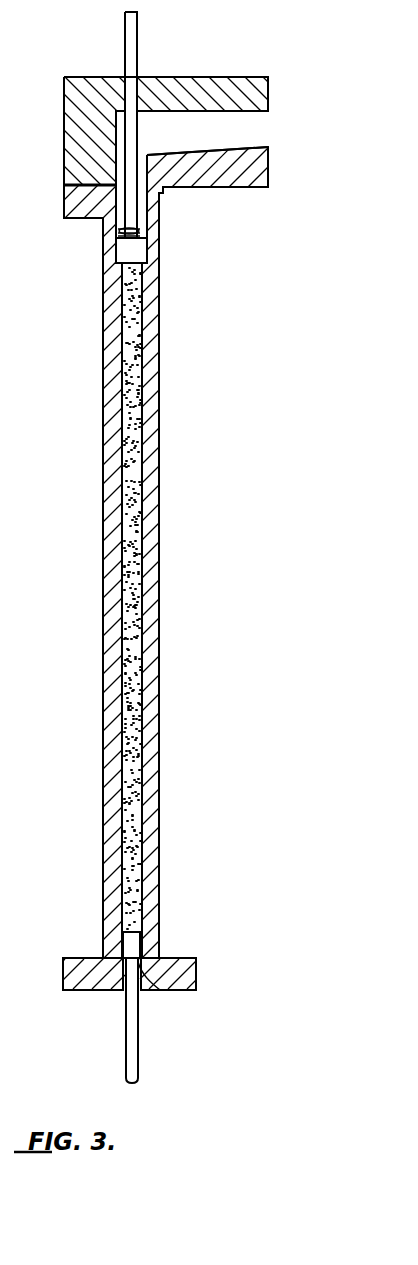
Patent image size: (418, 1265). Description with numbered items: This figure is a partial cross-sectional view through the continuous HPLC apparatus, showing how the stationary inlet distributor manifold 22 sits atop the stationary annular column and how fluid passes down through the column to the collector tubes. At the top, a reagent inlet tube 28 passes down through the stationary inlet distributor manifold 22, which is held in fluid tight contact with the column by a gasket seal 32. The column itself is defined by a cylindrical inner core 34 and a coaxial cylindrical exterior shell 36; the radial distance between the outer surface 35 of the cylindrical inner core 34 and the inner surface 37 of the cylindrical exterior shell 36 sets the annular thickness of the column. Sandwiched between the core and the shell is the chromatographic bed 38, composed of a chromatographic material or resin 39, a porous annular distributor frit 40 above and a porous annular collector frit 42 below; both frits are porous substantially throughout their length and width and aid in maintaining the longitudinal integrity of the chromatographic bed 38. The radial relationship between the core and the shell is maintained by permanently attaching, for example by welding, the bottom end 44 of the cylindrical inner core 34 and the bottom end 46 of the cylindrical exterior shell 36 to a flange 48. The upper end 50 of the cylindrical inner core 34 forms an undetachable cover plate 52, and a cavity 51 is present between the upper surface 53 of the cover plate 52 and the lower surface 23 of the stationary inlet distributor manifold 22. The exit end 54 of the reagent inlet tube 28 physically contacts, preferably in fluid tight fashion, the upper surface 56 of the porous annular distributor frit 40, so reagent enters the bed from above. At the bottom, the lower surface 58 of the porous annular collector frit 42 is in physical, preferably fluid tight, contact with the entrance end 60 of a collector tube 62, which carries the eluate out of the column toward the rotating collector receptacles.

The stationary inlet distributor manifold 22 is at (66, 103).
The lower surface 23 is at (190, 113).
The reagent inlet tube 28 is at (125, 33).
The gasket seal 32 is at (64, 184).
The cylindrical inner core 34 is at (160, 506).
The outer surface 35 is at (140, 688).
The cylindrical exterior shell 36 is at (103, 512).
The inner surface 37 is at (122, 792).
The chromatographic bed 38 is at (138, 371).
The chromatographic material or resin 39 is at (125, 428).
The porous annular distributor frit 40 is at (138, 251).
The porous annular collector frit 42 is at (134, 940).
The bottom end 44 is at (160, 946).
The bottom end 46 is at (103, 938).
The flange 48 is at (64, 968).
The upper end 50 is at (164, 192).
The cavity 51 is at (260, 121).
The cover plate 52 is at (268, 181).
The upper surface 53 is at (230, 147).
The exit end 54 is at (119, 232).
The upper surface 56 is at (117, 239).
The lower surface 58 is at (140, 966).
The entrance end 60 is at (120, 986).
The collector tube 62 is at (126, 1051).